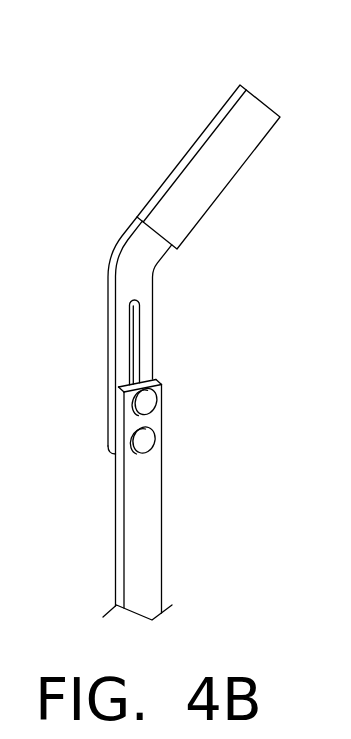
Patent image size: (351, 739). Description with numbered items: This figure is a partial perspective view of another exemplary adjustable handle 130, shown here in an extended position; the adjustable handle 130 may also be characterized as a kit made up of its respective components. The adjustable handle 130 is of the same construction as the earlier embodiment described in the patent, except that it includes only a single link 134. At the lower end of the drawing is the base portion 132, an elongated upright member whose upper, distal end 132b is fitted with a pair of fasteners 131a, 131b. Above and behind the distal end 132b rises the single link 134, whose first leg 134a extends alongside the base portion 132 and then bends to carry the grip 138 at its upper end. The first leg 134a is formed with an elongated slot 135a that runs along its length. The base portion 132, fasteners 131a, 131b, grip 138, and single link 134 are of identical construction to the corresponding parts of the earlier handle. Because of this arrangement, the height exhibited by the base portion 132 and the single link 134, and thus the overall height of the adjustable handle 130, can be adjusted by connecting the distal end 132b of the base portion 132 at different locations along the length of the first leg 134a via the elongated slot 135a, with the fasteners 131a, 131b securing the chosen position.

The adjustable handle 130 is at (103, 163).
The base portion 132 is at (162, 548).
The distal end 132b is at (157, 380).
The fastener 131a is at (147, 405).
The fastener 131b is at (145, 441).
The single link 134 is at (110, 262).
The first leg 134a is at (110, 353).
The elongated slot 135a is at (135, 312).
The grip 138 is at (240, 85).